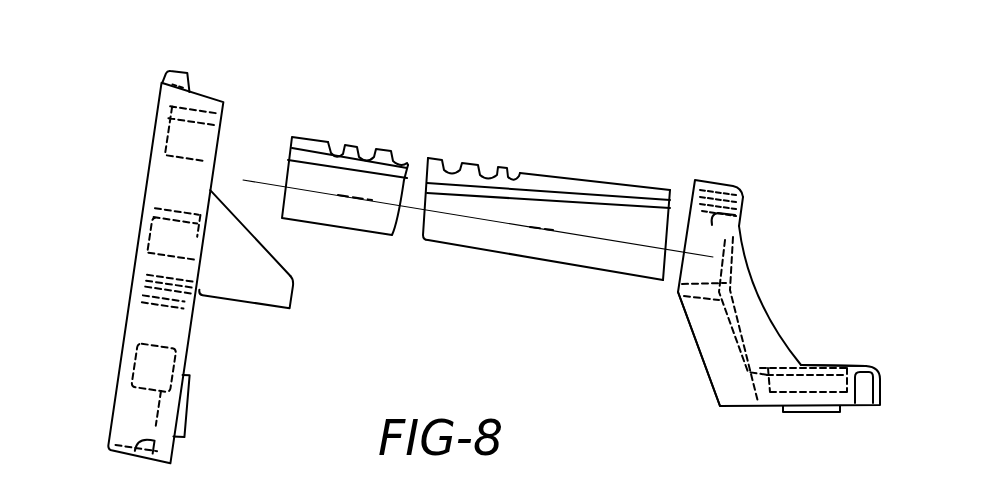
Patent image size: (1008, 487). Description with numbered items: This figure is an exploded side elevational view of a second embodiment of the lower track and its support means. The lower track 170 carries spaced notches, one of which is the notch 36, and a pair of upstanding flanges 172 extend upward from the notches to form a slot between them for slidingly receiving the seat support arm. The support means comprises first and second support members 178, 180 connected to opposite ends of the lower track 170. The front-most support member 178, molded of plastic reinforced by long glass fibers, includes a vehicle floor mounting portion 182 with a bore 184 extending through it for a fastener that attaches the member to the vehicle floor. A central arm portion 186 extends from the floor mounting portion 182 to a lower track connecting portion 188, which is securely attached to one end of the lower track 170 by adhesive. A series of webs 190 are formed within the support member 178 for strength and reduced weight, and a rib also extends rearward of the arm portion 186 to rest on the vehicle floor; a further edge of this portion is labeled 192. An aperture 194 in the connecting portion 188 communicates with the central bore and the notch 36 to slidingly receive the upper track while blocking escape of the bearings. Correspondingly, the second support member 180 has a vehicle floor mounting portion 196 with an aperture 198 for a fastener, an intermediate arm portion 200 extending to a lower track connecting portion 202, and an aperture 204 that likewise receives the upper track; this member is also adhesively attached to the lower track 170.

The notch 36 is at (680, 213).
The lower track 170 is at (438, 234).
The upstanding flanges 172 is at (522, 175).
The first support member 178 is at (236, 365).
The second support member 180 is at (804, 209).
The vehicle floor mounting portion 182 is at (117, 430).
The bore 184 is at (178, 438).
The central arm portion 186 is at (145, 243).
The lower track connecting portion 188 is at (163, 81).
The webs 190 is at (197, 302).
The flange edge 192 is at (229, 216).
The aperture 194 is at (160, 137).
The vehicle floor mounting portion 196 is at (870, 363).
The aperture 198 is at (845, 380).
The intermediate arm portion 200 is at (703, 312).
The lower track connecting portion 202 is at (684, 182).
The aperture 204 is at (740, 225).